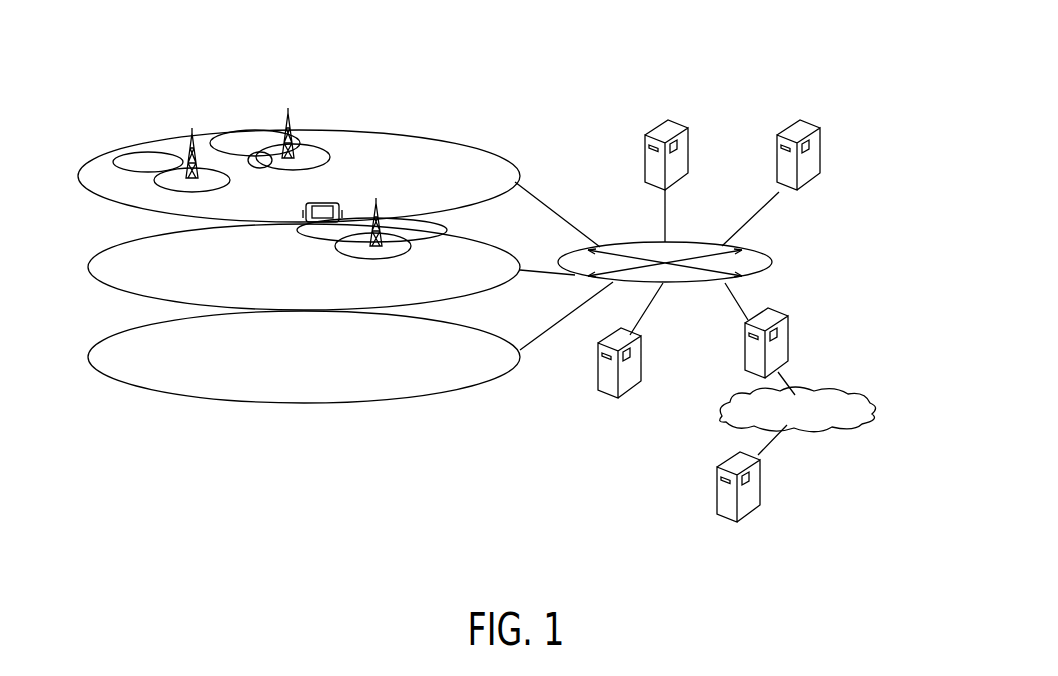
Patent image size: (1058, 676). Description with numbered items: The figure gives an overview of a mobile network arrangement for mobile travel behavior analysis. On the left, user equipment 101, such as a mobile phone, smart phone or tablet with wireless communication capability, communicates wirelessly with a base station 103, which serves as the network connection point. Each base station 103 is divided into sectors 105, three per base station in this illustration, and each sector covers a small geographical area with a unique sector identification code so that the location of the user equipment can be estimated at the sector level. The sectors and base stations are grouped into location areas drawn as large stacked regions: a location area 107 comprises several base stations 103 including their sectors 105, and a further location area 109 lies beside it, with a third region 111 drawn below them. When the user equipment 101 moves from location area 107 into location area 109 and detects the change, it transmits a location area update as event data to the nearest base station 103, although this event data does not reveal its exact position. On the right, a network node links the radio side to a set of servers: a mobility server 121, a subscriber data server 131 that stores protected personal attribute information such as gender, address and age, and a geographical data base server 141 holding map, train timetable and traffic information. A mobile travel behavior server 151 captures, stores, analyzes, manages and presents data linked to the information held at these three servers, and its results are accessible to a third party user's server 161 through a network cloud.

The user equipment 101 is at (333, 204).
The base station 103 is at (380, 207).
The sectors 105 is at (145, 158).
The location area 107 is at (472, 150).
The location area 109 is at (497, 243).
The third network layer 111 is at (498, 330).
The mobility server 121 is at (665, 53).
The subscriber data server 131 is at (800, 53).
The geographical data base server 141 is at (640, 350).
The mobile travel behavior server 151 is at (767, 322).
The third party user's server 161 is at (760, 485).